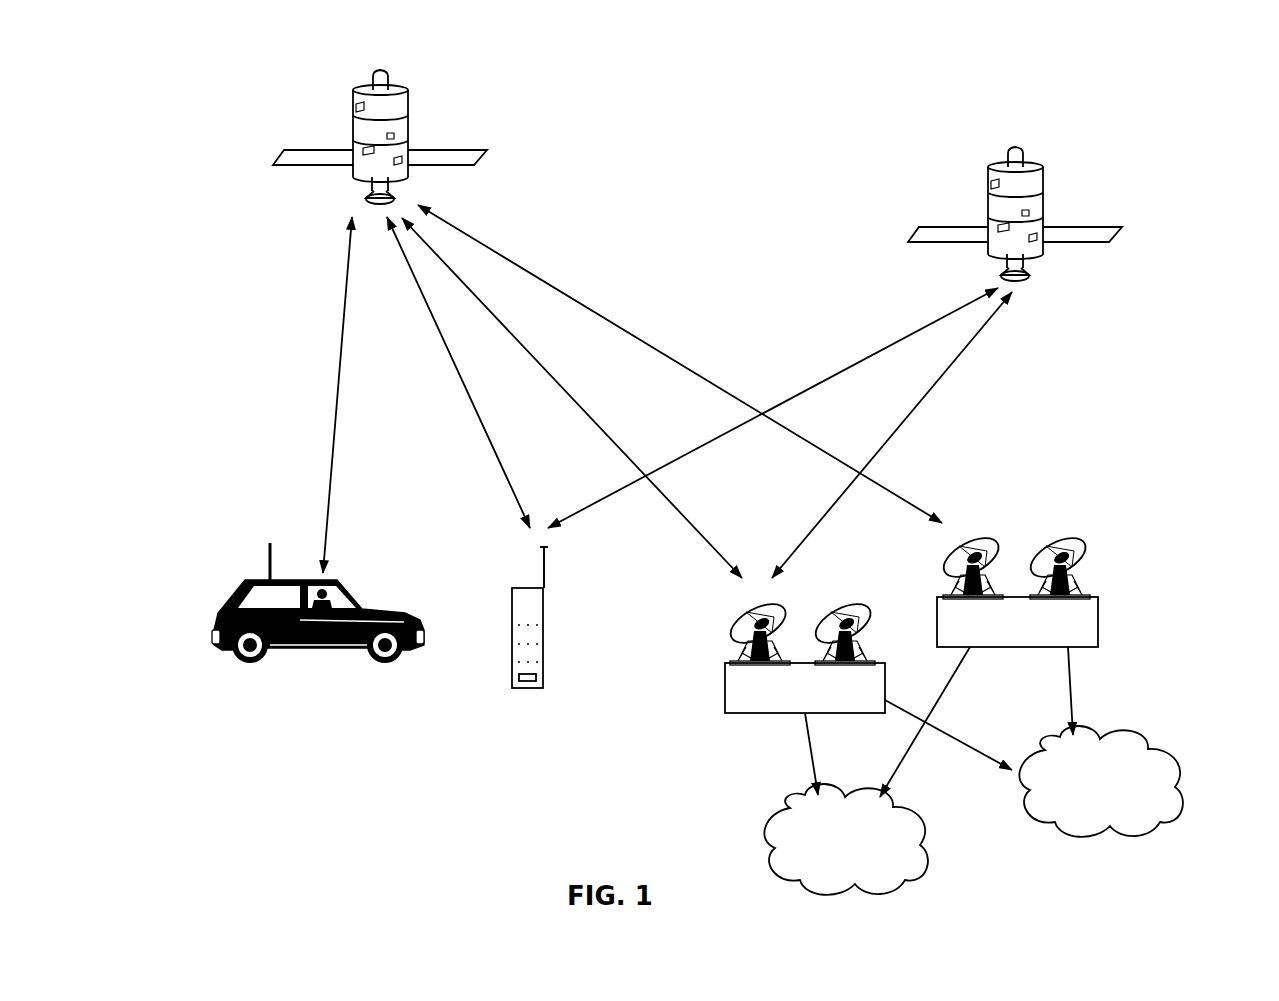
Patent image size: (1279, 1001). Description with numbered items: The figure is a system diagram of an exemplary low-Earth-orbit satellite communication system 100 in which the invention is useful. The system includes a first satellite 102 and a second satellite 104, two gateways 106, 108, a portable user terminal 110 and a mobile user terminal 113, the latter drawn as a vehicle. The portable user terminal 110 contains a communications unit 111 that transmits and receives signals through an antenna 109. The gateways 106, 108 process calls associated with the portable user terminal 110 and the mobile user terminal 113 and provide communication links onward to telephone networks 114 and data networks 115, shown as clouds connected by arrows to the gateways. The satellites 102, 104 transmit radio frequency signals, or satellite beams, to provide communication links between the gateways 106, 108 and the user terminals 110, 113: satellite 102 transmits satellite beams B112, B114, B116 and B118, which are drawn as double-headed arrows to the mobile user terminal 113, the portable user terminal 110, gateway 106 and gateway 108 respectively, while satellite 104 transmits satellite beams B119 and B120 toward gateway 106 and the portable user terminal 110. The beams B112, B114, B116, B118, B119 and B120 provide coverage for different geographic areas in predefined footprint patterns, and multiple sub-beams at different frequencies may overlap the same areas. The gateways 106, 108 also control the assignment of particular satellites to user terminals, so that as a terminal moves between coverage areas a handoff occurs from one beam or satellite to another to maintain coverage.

The satellite communication system 100 is at (1172, 147).
The first satellite 102 is at (382, 73).
The second satellite 104 is at (1020, 152).
The gateway 106 is at (725, 690).
The gateway 108 is at (1099, 622).
The antenna 109 is at (546, 566).
The portable user terminal 110 is at (512, 663).
The communications unit 111 is at (544, 676).
The mobile user terminal 113 is at (218, 613).
The telephone networks 114 is at (900, 884).
The data networks 115 is at (1158, 821).
The satellite beam B112 is at (337, 383).
The satellite beam B114 is at (485, 432).
The satellite beam B116 is at (558, 383).
The satellite beam B118 is at (605, 318).
The satellite beam B119 is at (926, 394).
The satellite beam B120 is at (727, 435).